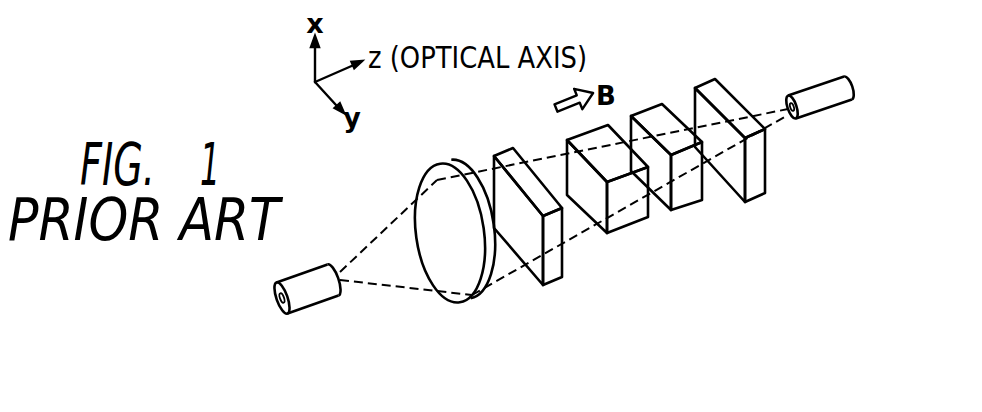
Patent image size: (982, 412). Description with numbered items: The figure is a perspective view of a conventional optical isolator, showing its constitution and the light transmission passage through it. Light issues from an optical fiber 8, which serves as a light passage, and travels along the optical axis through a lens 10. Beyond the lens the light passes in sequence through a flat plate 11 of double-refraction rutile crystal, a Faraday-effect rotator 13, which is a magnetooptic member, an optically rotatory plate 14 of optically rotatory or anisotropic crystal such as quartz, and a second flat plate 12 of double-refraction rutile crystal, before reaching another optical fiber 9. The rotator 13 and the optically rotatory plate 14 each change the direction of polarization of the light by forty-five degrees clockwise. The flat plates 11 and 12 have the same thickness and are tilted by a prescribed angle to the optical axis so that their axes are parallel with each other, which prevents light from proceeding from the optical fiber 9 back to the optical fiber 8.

The optical fiber 8 is at (317, 307).
The another optical fiber 9 is at (810, 118).
The lens 10 is at (467, 306).
The flat plate 11 is at (548, 287).
The flat plate 12 is at (755, 203).
The Faraday-effect rotator 13 is at (628, 232).
The optically rotatory plate 14 is at (690, 203).